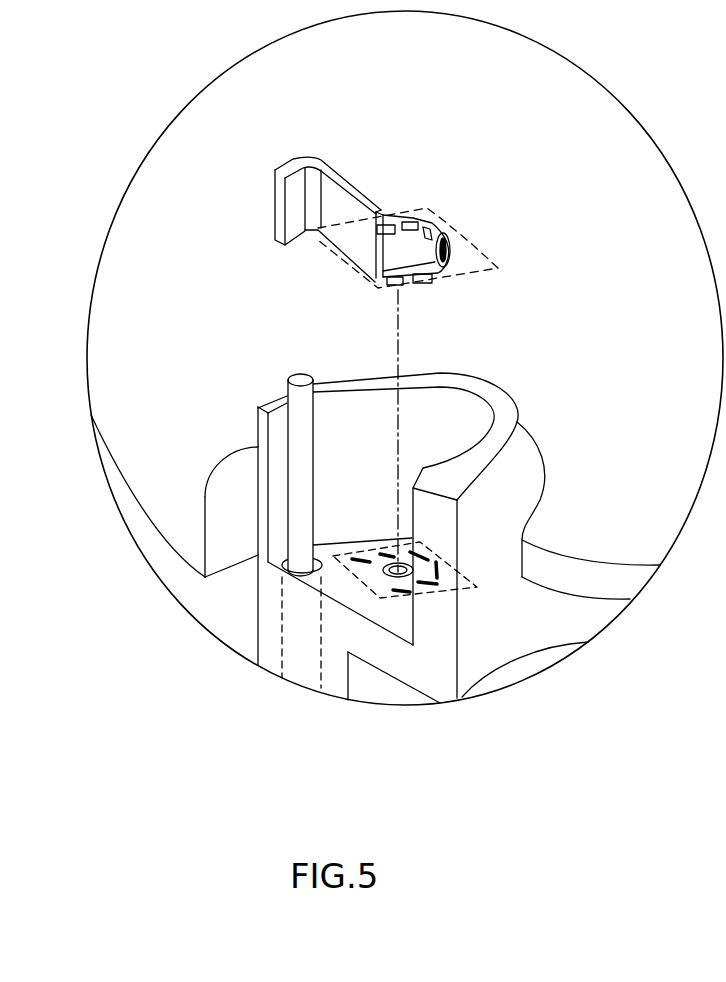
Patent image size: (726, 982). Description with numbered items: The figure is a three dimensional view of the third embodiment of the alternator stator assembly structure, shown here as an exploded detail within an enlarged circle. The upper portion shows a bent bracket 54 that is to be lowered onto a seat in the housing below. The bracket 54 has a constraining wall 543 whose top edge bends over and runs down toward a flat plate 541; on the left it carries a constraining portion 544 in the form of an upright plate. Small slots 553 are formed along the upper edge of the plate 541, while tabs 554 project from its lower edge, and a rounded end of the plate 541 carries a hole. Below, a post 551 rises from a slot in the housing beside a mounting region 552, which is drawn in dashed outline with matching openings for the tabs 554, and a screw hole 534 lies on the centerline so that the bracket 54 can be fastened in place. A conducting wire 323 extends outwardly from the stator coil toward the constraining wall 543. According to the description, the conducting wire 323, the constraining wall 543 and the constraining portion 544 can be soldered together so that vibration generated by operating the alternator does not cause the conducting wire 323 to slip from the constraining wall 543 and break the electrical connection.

The fixing bracket 54 is at (307, 155).
The constraining wall 543 is at (338, 160).
The constraining portion 544 is at (281, 203).
The mounting plate of bracket 541 is at (443, 257).
The slots 553 is at (413, 210).
The tabs 554 is at (425, 281).
The positioning post 551 is at (365, 552).
The mounting seat 552 is at (387, 543).
The screw hole 534 is at (385, 577).
The conducting wire 323 is at (307, 493).